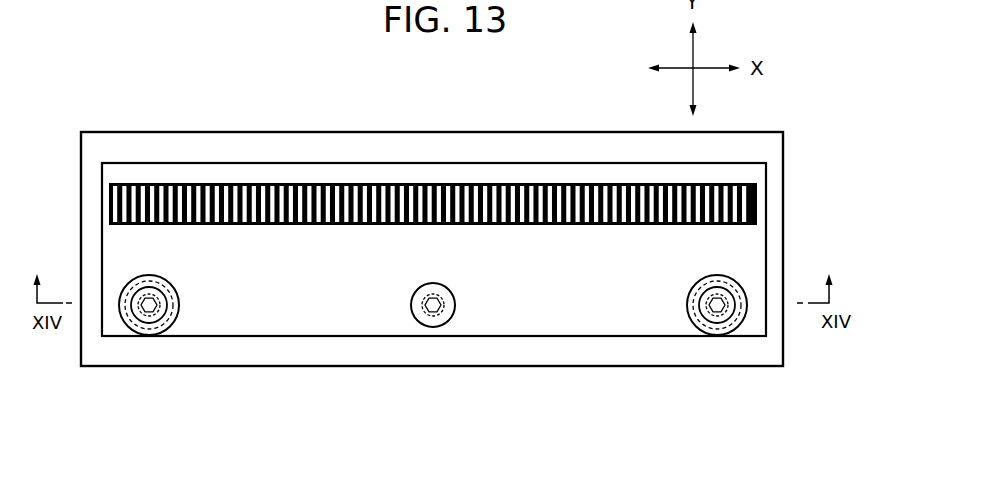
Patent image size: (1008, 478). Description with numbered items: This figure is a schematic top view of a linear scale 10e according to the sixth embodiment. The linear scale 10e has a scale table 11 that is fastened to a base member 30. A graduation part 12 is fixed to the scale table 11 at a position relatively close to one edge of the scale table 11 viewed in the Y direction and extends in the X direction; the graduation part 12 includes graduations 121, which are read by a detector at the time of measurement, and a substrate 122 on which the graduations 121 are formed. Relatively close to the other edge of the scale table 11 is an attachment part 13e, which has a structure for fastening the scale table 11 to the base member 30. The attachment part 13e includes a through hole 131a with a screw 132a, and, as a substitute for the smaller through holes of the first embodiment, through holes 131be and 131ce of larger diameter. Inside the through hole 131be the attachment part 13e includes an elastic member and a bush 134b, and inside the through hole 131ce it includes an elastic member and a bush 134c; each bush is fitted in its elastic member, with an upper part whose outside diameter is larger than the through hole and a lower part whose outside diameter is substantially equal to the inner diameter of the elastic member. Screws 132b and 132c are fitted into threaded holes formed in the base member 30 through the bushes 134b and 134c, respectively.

The linear scale 10e is at (465, 224).
The scale table 11 is at (480, 167).
The graduation part 12 is at (490, 186).
The graduations 121 is at (753, 208).
The substrate 122 is at (757, 191).
The base member 30 is at (777, 251).
The attachment part 13e is at (112, 279).
The screw 132b is at (154, 363).
The bush 134b is at (152, 332).
The through hole 131be is at (166, 328).
The screw 132a is at (430, 348).
The through hole 131a is at (443, 322).
The screw 132c is at (719, 362).
The bush 134c is at (720, 332).
The through hole 131ce is at (735, 320).